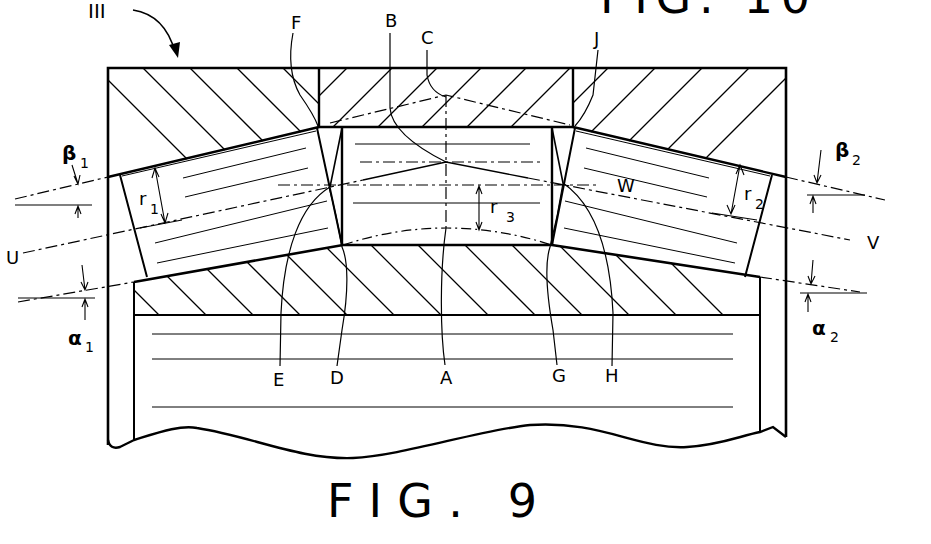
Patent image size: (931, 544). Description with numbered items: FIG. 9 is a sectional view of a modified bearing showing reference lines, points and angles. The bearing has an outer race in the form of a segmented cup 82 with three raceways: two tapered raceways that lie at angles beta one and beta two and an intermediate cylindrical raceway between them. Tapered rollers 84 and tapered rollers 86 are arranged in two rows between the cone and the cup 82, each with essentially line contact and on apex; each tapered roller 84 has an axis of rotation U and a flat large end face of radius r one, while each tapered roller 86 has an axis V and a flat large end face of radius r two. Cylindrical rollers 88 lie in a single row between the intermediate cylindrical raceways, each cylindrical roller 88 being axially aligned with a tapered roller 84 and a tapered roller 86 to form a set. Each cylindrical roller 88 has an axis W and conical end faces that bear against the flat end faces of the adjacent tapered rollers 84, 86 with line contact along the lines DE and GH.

The segmented cup 82 is at (134, 88).
The tapered rollers 84 is at (183, 182).
The tapered rollers 86 is at (687, 170).
The cylindrical rollers 88 is at (465, 147).